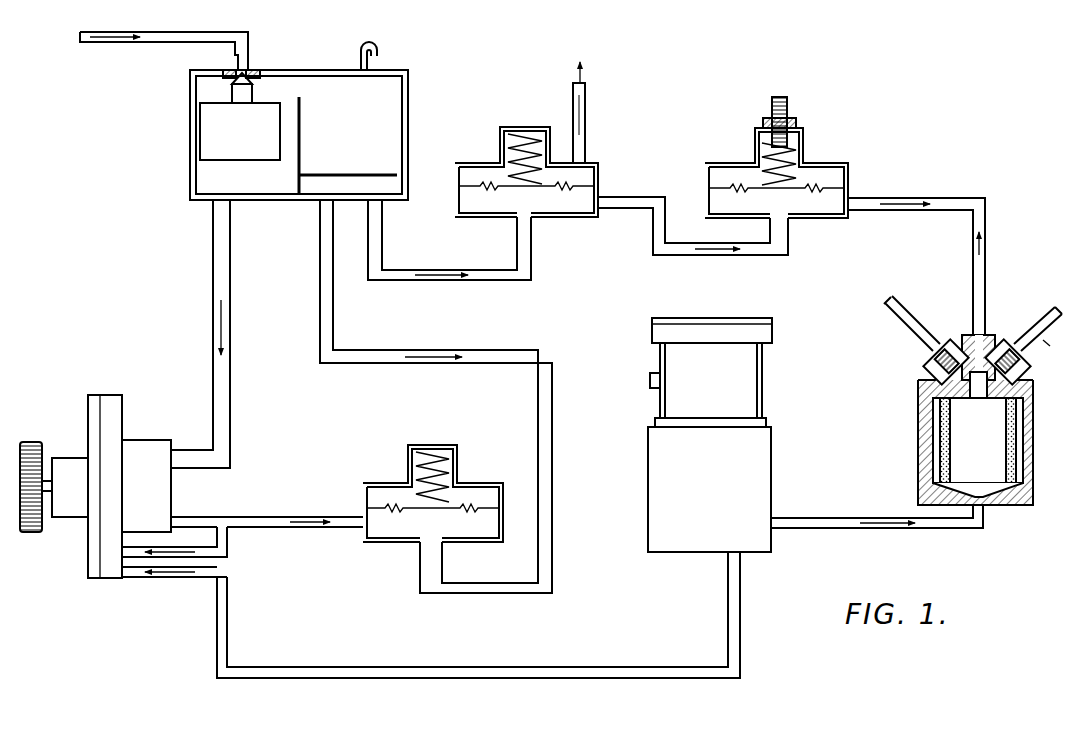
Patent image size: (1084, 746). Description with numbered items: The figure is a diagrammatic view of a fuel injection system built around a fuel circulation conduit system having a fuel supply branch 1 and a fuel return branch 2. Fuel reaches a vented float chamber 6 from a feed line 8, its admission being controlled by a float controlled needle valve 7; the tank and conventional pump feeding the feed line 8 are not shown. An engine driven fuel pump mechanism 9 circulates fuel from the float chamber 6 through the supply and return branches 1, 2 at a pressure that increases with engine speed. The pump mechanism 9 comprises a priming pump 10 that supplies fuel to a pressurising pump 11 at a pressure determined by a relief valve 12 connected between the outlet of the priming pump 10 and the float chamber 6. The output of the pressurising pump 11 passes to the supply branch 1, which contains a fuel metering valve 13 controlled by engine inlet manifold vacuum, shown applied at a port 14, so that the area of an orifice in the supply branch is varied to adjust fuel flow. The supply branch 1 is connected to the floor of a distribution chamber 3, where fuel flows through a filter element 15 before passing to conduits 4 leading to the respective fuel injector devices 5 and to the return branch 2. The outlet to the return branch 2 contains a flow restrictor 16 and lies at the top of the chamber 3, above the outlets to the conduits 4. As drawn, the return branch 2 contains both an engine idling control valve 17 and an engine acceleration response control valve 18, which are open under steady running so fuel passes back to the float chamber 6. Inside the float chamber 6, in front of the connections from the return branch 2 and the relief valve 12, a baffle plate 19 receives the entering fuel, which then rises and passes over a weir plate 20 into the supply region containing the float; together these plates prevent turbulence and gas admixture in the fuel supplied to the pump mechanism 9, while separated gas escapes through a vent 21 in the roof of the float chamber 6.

The fuel supply branch 1 is at (330, 673).
The fuel return branch 2 is at (420, 268).
The distribution chamber 3 is at (970, 393).
The conduits 4 is at (1045, 338).
The fuel injector devices 5 is at (890, 312).
The float chamber 6 is at (389, 68).
The float controlled needle valve 7 is at (245, 97).
The feed line 8 is at (155, 35).
The fuel pump mechanism 9 is at (133, 432).
The priming pump 10 is at (155, 450).
The pressurising pump 11 is at (103, 422).
The relief valve 12 is at (460, 470).
The fuel metering valve 13 is at (772, 443).
The port 14 is at (652, 390).
The filter element 15 is at (942, 420).
The flow restrictor 16 is at (993, 356).
The engine idling control valve 17 is at (757, 136).
The engine acceleration response control valve 18 is at (507, 127).
The baffle plate 19 is at (366, 172).
The weir plate 20 is at (301, 146).
The vent 21 is at (360, 53).